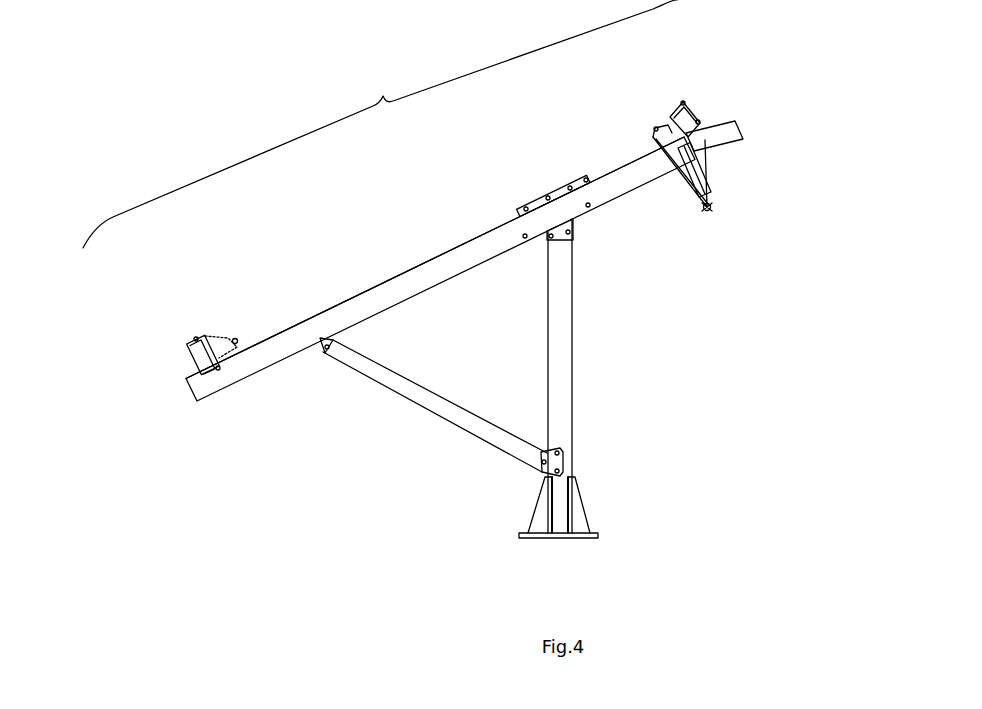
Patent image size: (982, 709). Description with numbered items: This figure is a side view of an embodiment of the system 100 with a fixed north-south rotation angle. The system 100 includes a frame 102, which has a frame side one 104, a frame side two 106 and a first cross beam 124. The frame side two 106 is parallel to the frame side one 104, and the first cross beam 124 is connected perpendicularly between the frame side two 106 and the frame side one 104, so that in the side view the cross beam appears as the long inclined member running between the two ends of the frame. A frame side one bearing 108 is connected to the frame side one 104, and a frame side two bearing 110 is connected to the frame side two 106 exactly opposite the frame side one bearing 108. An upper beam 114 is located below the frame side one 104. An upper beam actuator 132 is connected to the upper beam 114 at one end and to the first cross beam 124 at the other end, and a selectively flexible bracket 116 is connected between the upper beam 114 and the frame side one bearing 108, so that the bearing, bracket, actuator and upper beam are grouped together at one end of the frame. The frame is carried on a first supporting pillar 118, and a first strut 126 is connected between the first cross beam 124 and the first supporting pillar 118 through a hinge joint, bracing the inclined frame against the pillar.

The system 100 is at (403, 527).
The frame 102 is at (391, 124).
The frame side one 104 is at (738, 130).
The frame side two 106 is at (194, 391).
The frame side one bearing 108 is at (700, 118).
The frame side two bearing 110 is at (187, 354).
The upper beam 114 is at (710, 212).
The selectively flexible bracket 116 is at (668, 180).
The first supporting pillar 118 is at (560, 370).
The first cross beam 124 is at (392, 286).
The first strut 126 is at (418, 399).
The upper beam actuator 132 is at (700, 158).